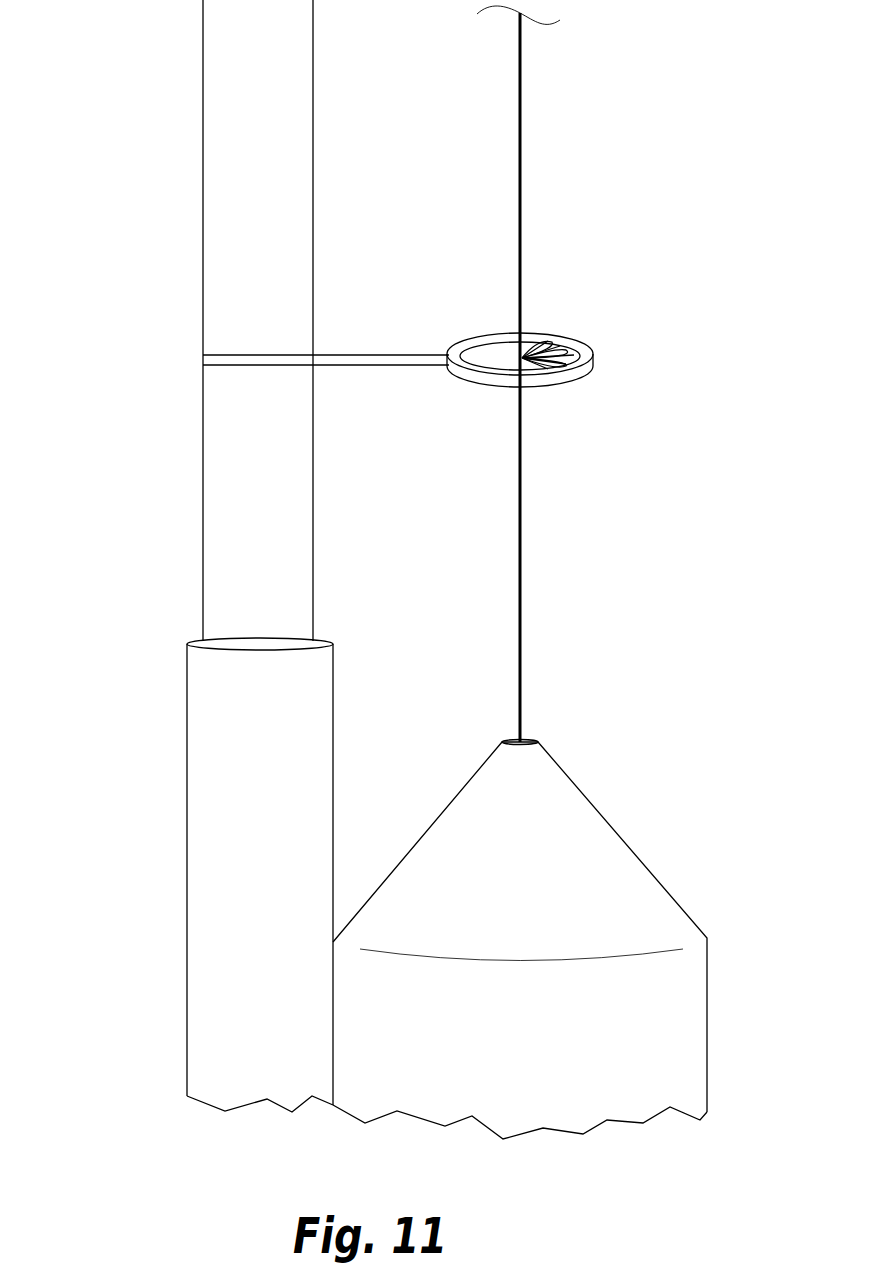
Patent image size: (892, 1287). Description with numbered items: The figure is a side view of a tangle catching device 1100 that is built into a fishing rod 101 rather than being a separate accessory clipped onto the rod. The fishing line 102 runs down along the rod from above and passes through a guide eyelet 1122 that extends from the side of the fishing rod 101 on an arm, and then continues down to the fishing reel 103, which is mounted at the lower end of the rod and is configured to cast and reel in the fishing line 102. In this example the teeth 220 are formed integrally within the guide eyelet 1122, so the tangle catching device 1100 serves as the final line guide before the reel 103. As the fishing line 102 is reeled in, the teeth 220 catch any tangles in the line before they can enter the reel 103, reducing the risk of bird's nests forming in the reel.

The fishing rod 101 is at (210, 732).
The fishing line 102 is at (522, 72).
The fishing reel 103 is at (605, 860).
The teeth 220 is at (558, 341).
The tangle catching device 1100 is at (480, 338).
The guide eyelet 1122 is at (555, 377).